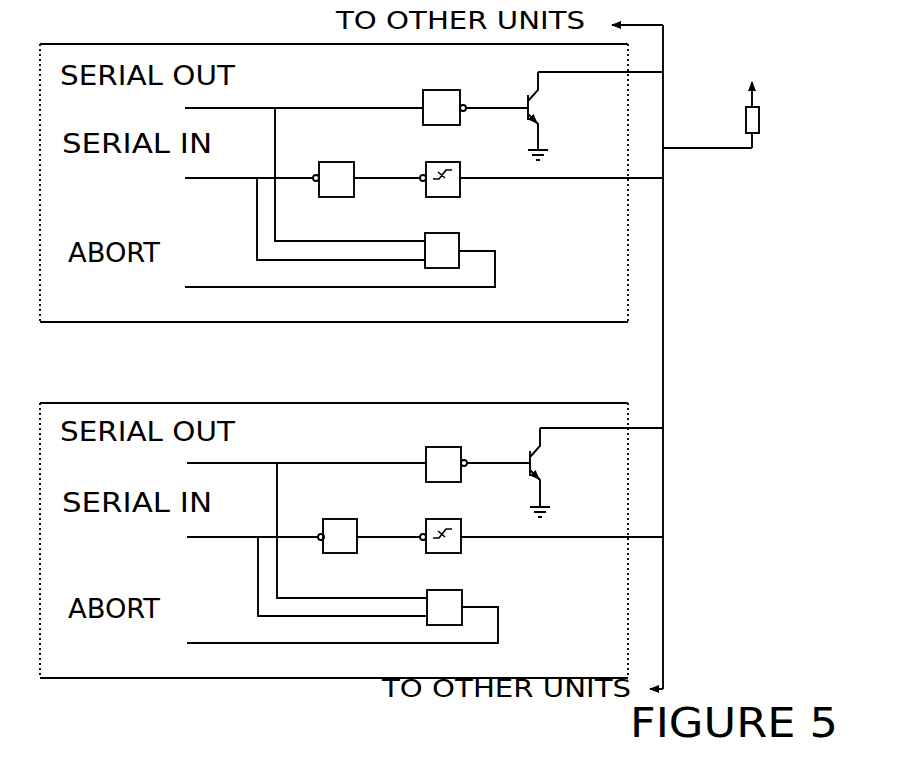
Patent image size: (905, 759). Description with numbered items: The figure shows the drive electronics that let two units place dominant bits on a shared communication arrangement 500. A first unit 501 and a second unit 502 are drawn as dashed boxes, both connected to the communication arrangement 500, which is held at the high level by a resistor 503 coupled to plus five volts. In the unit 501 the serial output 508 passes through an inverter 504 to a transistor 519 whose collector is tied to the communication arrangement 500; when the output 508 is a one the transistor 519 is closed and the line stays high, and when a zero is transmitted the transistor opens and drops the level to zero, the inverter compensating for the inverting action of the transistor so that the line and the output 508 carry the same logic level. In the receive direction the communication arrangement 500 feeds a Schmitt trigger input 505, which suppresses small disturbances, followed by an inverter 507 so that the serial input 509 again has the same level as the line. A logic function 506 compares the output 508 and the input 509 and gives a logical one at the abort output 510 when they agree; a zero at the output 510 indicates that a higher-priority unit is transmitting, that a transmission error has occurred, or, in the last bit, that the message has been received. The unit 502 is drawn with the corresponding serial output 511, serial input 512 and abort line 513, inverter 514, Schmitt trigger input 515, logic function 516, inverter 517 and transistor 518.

The communication arrangement 500 is at (663, 313).
The unit 501 is at (334, 166).
The unit 502 is at (334, 523).
The resistor 503 is at (729, 98).
The inverter 504 is at (454, 90).
The Schmitt trigger inverter 505 is at (497, 182).
The logic function 506 is at (504, 250).
The inverter 507 is at (349, 161).
The output 508 is at (305, 160).
The signal 509 is at (305, 205).
The output signal 510 is at (340, 270).
The serial out line 511 is at (307, 517).
The serial in line 512 is at (307, 563).
The abort line 513 is at (342, 626).
The inverter 514 is at (456, 447).
The Schmitt trigger inverter 515 is at (496, 539).
The exclusive-NOR gate 516 is at (507, 606).
The inverter 517 is at (350, 518).
The transistor 518 is at (564, 472).
The transistor 519 is at (563, 116).